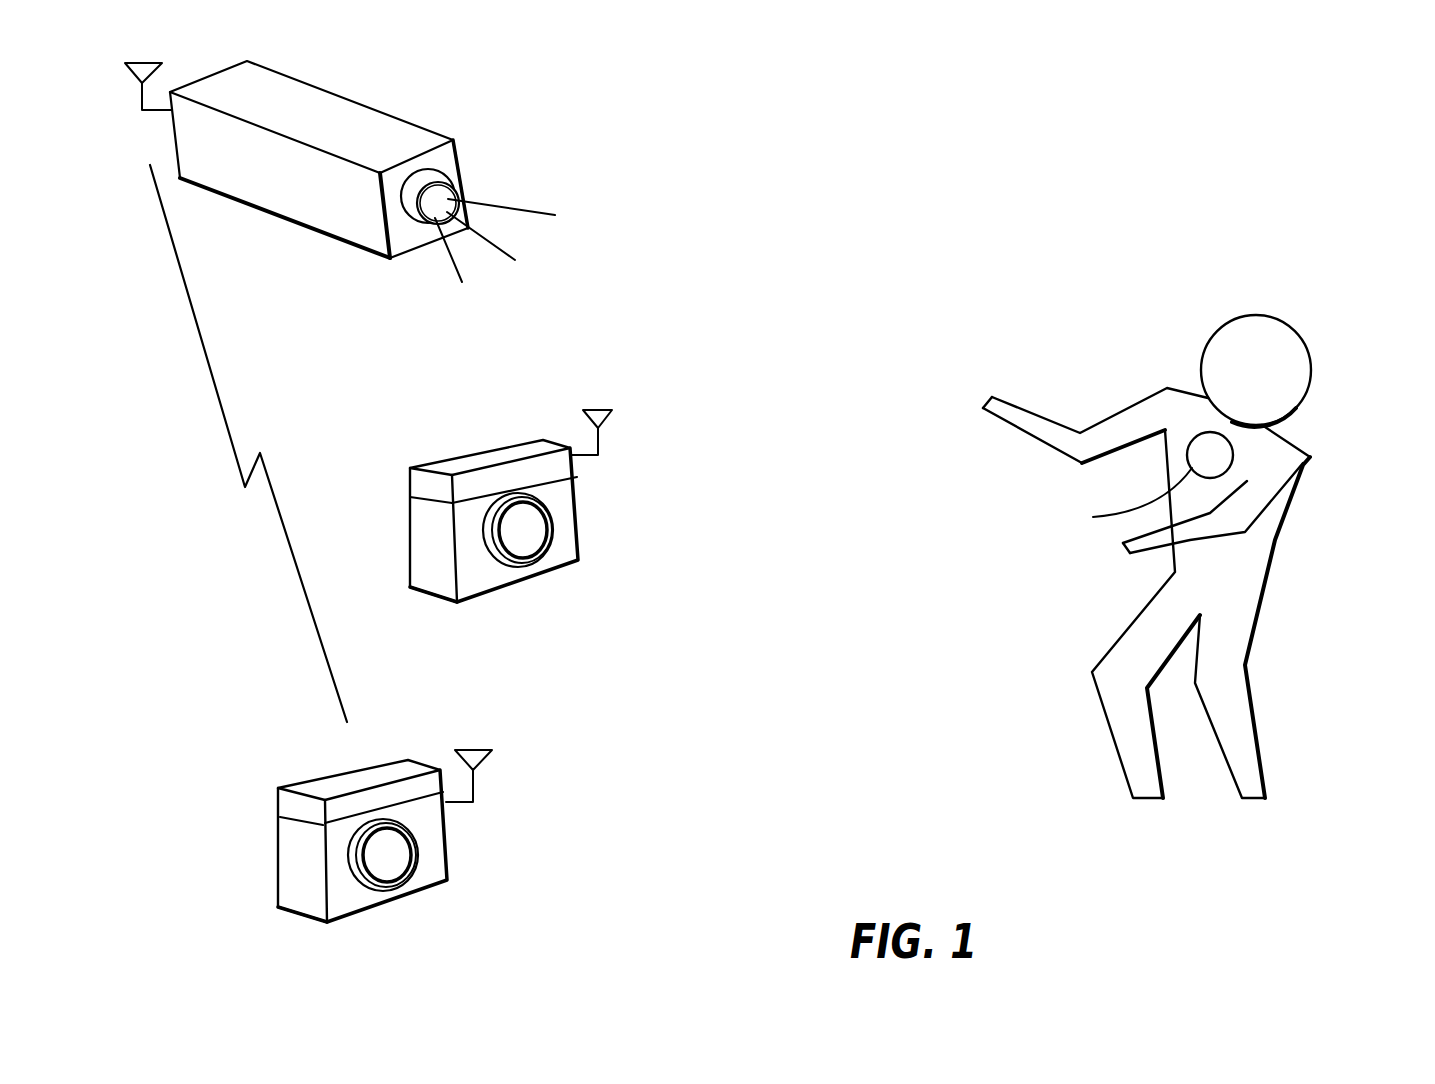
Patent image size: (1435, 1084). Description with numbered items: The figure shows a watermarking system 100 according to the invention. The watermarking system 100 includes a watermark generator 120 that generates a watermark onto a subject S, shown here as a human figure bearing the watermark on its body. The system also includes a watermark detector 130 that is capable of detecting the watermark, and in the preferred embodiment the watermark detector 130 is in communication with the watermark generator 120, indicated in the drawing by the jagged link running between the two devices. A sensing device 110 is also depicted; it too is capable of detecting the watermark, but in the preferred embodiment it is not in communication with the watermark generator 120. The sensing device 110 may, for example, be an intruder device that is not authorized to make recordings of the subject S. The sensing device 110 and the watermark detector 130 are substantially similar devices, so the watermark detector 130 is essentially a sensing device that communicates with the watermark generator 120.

The watermarking system 100 is at (1250, 155).
The sensing device 110 is at (482, 450).
The watermark generator 120 is at (447, 140).
The watermark detector 130 is at (277, 830).
The subject S is at (1310, 387).